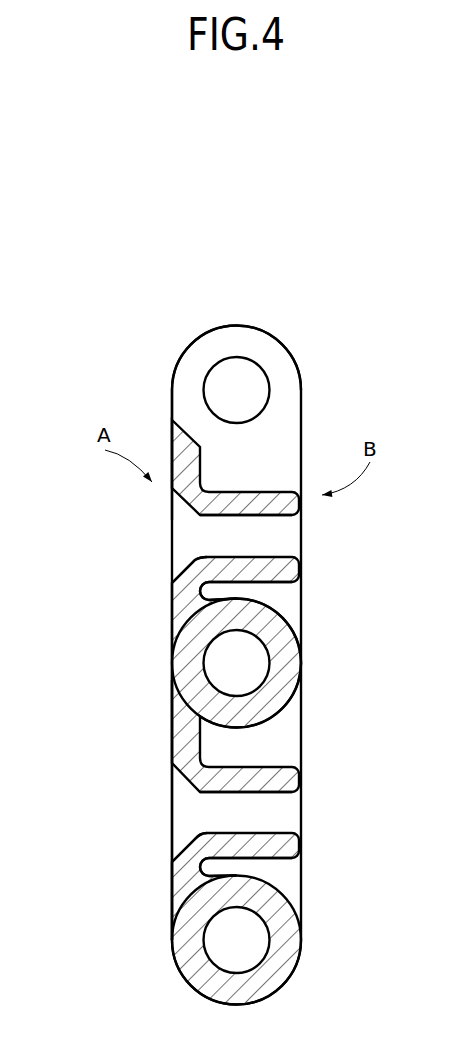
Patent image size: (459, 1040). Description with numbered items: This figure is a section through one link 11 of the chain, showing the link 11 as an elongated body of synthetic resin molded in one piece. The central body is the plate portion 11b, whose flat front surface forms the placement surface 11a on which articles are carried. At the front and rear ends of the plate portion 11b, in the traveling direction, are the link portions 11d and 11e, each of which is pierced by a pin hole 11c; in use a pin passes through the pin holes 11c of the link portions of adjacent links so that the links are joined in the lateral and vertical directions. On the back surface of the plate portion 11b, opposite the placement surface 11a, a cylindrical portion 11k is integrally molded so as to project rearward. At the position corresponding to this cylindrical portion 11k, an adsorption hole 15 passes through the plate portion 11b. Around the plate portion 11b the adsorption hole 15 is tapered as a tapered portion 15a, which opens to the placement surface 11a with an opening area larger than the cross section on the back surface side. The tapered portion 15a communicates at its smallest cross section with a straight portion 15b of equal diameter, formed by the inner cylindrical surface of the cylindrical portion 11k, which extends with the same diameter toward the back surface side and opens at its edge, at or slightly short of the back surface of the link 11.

The link 11 is at (108, 347).
The placement surface 11a is at (172, 880).
The plate portion 11b is at (172, 438).
The pin hole 11c is at (268, 390).
The link portion 11d is at (245, 335).
The link portion 11e is at (296, 633).
The cylindrical portion 11k is at (274, 594).
The adsorption hole 15 is at (157, 517).
The tapered portion 15a is at (186, 568).
The straight portion 15b is at (273, 518).